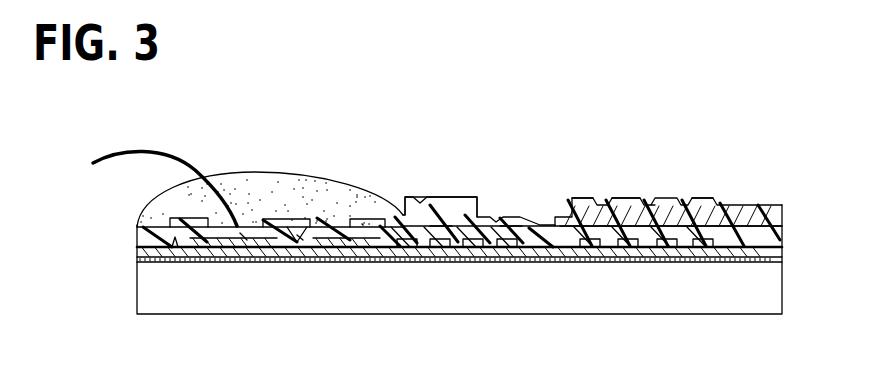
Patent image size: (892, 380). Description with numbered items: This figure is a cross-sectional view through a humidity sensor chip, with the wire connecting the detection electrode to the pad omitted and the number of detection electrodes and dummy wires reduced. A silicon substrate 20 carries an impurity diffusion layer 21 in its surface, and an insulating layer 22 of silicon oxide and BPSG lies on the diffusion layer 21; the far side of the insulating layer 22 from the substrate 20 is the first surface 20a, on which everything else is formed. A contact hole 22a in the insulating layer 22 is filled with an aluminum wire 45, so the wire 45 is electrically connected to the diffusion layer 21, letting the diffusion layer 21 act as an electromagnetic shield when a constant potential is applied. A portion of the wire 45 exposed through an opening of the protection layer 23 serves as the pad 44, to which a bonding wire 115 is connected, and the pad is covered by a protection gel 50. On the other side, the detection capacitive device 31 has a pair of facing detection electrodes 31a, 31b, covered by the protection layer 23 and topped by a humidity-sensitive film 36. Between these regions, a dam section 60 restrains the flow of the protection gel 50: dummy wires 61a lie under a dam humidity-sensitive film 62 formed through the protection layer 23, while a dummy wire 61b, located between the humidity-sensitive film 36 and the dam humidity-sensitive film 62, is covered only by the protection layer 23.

The substrate 20 is at (767, 292).
The first surface 20a is at (175, 240).
The impurity diffusion layer 21 is at (767, 259).
The insulating layer 22 is at (240, 250).
The contact hole 22a is at (302, 245).
The protection layer 23 is at (137, 237).
The detection capacitive device 31 is at (746, 177).
The detection electrode 31a is at (628, 199).
The detection electrode 31b is at (597, 199).
The humidity-sensitive film 36 is at (767, 215).
The pad 44 is at (244, 235).
The wire 45 is at (300, 237).
The protection gel 50 is at (276, 190).
The dam section 60 is at (487, 156).
The dummy wire 61a is at (440, 230).
The dummy wire 61b is at (510, 228).
The dam humidity-sensitive film 62 is at (410, 197).
The bonding wire 115 is at (130, 150).